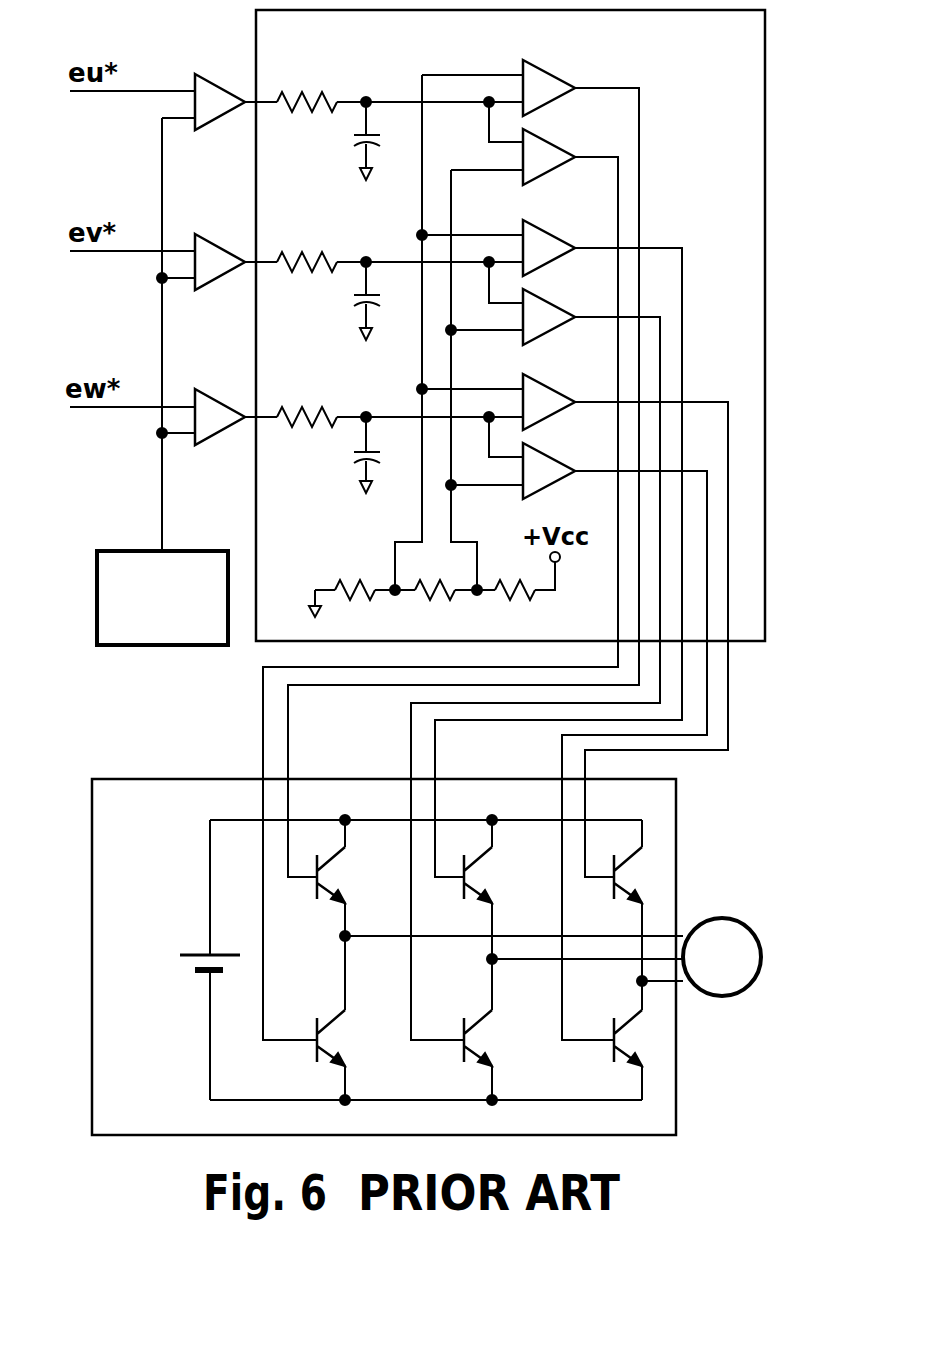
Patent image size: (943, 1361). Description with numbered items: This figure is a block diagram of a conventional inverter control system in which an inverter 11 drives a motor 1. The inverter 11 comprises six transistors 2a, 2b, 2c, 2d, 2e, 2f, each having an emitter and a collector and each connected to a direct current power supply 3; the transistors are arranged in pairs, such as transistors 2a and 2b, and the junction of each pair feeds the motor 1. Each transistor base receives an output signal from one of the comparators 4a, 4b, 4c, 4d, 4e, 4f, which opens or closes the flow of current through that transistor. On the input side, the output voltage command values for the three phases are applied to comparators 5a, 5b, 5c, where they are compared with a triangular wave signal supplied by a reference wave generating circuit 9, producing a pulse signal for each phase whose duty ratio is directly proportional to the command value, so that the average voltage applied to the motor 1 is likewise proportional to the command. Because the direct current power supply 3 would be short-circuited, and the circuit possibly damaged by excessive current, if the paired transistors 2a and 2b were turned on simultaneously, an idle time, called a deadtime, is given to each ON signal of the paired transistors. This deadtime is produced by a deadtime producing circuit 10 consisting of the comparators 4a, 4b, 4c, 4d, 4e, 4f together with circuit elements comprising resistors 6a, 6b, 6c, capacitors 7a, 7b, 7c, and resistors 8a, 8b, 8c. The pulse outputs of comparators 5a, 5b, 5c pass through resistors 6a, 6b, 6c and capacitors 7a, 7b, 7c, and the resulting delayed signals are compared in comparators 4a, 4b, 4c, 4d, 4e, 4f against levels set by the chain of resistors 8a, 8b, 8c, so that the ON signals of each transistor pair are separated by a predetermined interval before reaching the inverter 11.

The motor 1 is at (736, 920).
The transistor 2a is at (349, 875).
The transistor 2b is at (349, 1038).
The transistor 2c is at (495, 875).
The transistor 2d is at (497, 1038).
The transistor 2e is at (644, 875).
The transistor 2f is at (644, 1038).
The direct current power supply 3 is at (186, 970).
The comparator 4a is at (560, 68).
The comparator 4b is at (560, 139).
The comparator 4c is at (560, 230).
The comparator 4d is at (560, 300).
The comparator 4e is at (560, 384).
The comparator 4f is at (560, 455).
The comparator 5a is at (217, 80).
The comparator 5b is at (218, 242).
The comparator 5c is at (218, 398).
The resistor 6a is at (300, 93).
The resistor 6b is at (300, 253).
The resistor 6c is at (292, 409).
The capacitor 7a is at (340, 145).
The capacitor 7b is at (340, 306).
The capacitor 7c is at (338, 460).
The resistor 8a is at (355, 608).
The resistor 8b is at (435, 608).
The resistor 8c is at (515, 608).
The reference wave generating circuit 9 is at (125, 548).
The deadtime producing circuit 10 is at (247, 645).
The inverter 11 is at (160, 779).